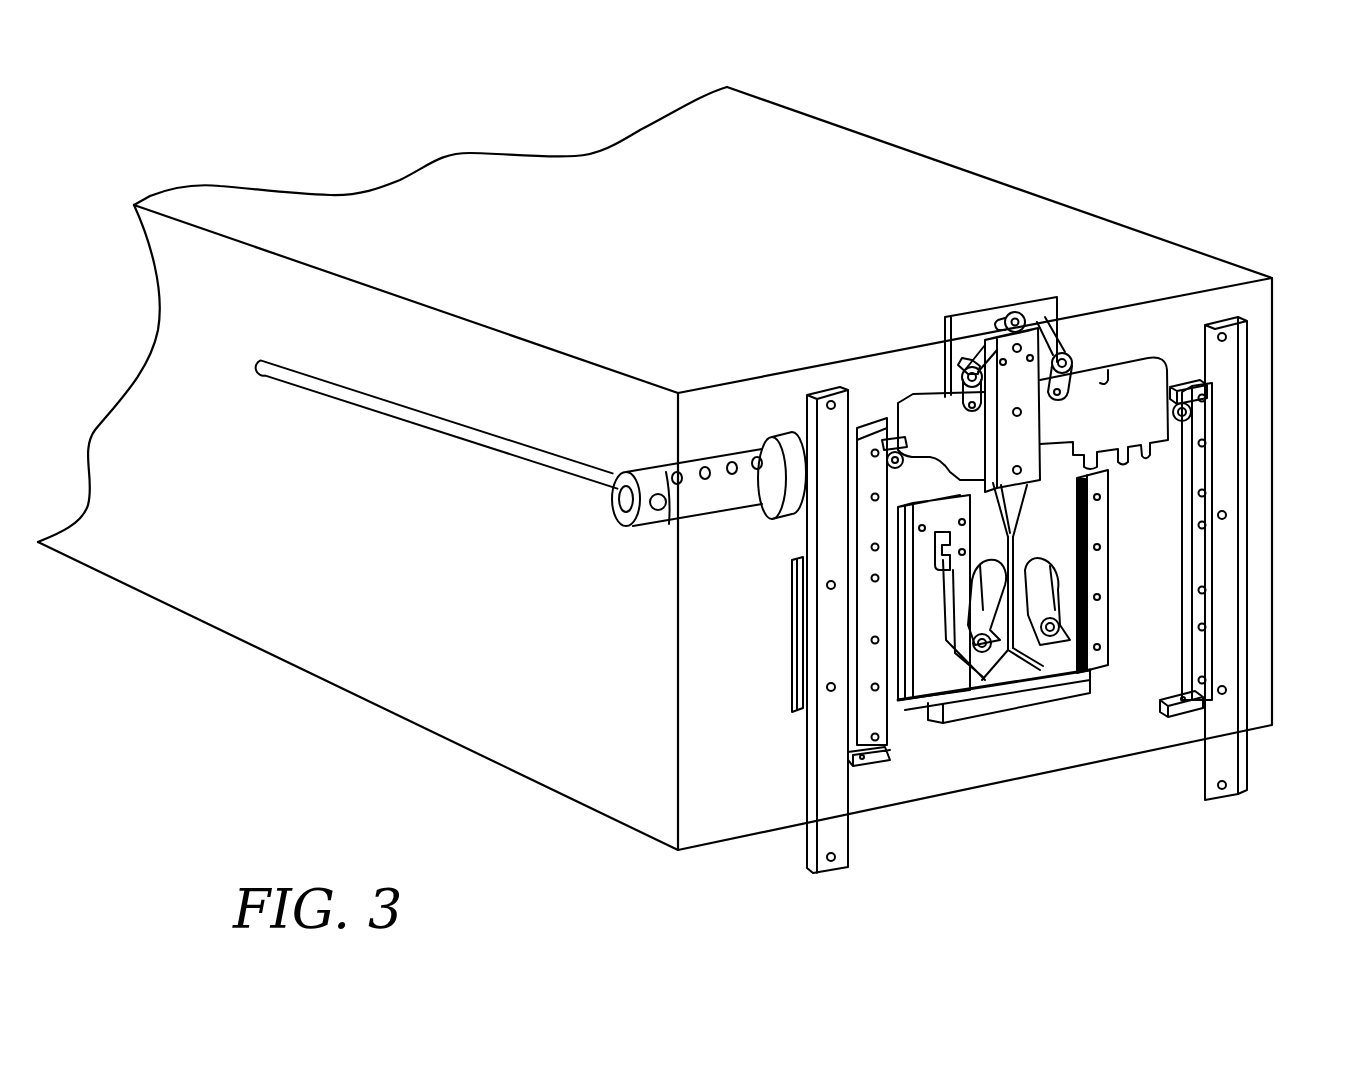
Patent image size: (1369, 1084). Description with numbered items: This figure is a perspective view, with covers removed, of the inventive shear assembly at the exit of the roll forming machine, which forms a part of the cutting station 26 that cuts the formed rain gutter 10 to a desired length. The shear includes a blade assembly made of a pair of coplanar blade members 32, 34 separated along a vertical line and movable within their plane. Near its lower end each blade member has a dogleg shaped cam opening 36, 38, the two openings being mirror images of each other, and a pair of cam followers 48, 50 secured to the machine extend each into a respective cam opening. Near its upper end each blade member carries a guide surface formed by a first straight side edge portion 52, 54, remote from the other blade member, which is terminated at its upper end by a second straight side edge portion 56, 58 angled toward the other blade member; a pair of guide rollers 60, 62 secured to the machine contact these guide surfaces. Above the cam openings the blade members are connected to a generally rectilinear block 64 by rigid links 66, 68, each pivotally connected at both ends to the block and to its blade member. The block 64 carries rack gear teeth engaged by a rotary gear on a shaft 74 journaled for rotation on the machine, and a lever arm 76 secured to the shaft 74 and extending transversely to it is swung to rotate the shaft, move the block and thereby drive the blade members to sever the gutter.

The rain gutter 10 is at (1045, 192).
The cutting station 26 is at (1073, 728).
The blade member 32 is at (915, 395).
The blade member 34 is at (1110, 360).
The cam opening 36 is at (972, 578).
The cam opening 38 is at (1027, 568).
The cam follower 48 is at (990, 652).
The cam follower 50 is at (1058, 636).
The first straight side edge portion 52 is at (890, 420).
The first straight side edge portion 54 is at (1195, 366).
The second straight side edge portion 56 is at (937, 412).
The second straight side edge portion 58 is at (1163, 360).
The guide roller 60 is at (903, 457).
The guide roller 62 is at (1200, 415).
The block 64 is at (1040, 440).
The rigid link 66 is at (967, 323).
The rigid link 68 is at (1060, 313).
The shaft 74 is at (707, 496).
The lever arm 76 is at (522, 466).